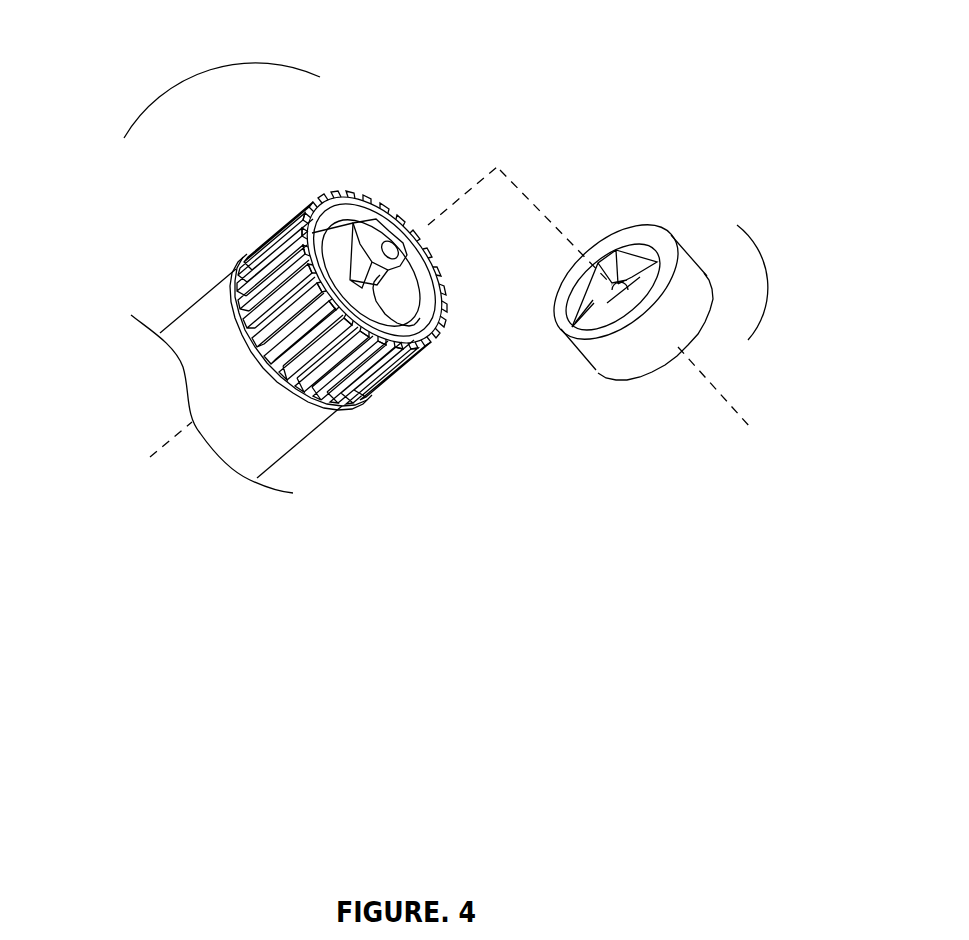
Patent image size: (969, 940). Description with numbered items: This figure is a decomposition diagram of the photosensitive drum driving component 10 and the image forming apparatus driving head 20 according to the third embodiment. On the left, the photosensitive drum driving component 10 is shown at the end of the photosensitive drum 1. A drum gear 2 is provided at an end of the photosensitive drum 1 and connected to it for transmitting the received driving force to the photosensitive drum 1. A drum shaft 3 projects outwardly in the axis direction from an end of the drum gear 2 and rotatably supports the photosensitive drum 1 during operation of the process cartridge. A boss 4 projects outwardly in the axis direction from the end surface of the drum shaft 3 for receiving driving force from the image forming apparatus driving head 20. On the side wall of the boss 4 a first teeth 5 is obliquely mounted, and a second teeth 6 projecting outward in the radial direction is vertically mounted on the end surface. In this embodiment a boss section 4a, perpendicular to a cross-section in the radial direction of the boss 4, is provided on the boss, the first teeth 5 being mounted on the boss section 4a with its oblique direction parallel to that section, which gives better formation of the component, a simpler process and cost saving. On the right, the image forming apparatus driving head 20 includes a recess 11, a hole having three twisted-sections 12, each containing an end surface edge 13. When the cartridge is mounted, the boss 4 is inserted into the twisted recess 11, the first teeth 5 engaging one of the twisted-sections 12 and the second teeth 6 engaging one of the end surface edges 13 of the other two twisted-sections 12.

The photosensitive drum 1 is at (200, 330).
The drum gear 2 is at (343, 405).
The drum shaft 3 is at (392, 301).
The boss 4 is at (396, 360).
The boss section 4a is at (404, 283).
The first teeth 5 is at (335, 246).
The second teeth 6 is at (371, 242).
The photosensitive drum driving component 10 is at (222, 73).
The recess 11 is at (640, 265).
The twisted-sections 12 is at (573, 335).
The end surface edge 13 is at (628, 248).
The image forming apparatus driving head 20 is at (775, 282).